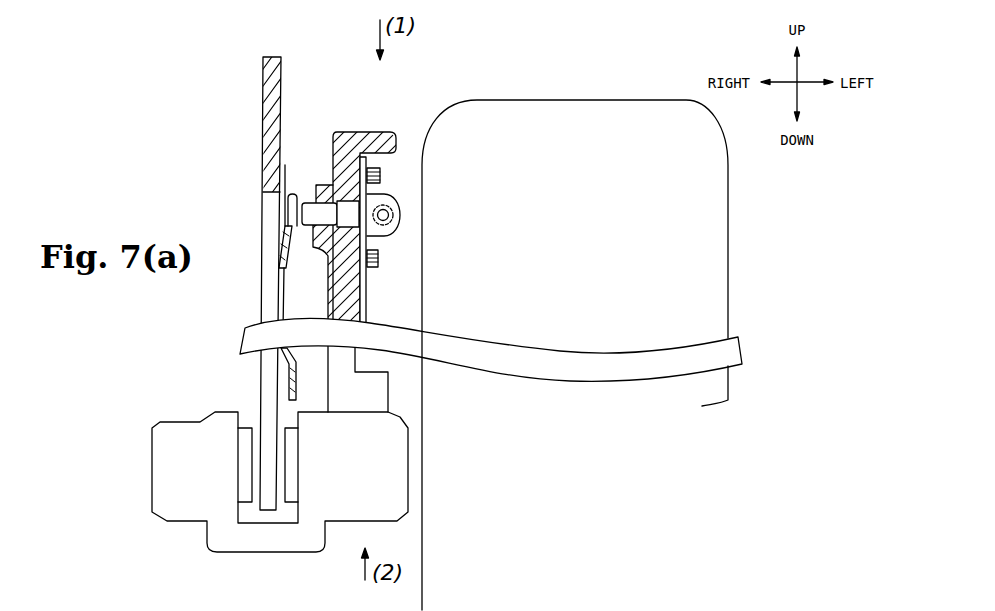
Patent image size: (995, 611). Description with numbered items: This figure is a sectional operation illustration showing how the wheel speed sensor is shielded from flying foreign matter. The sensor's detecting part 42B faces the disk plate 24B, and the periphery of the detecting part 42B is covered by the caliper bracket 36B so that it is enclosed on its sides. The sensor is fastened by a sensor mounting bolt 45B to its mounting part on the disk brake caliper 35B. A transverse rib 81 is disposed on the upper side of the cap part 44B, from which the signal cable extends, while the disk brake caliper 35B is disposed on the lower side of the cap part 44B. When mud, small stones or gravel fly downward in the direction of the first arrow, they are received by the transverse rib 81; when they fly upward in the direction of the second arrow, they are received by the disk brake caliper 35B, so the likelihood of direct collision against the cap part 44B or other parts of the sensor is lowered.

The disk plate 24B is at (276, 58).
The caliper bracket 36B is at (338, 122).
The detecting part 42B is at (309, 198).
The transverse rib 81 is at (378, 148).
The cap part 44B is at (401, 196).
The sensor mounting bolt 45B is at (388, 183).
The disk brake caliper 35B is at (215, 562).